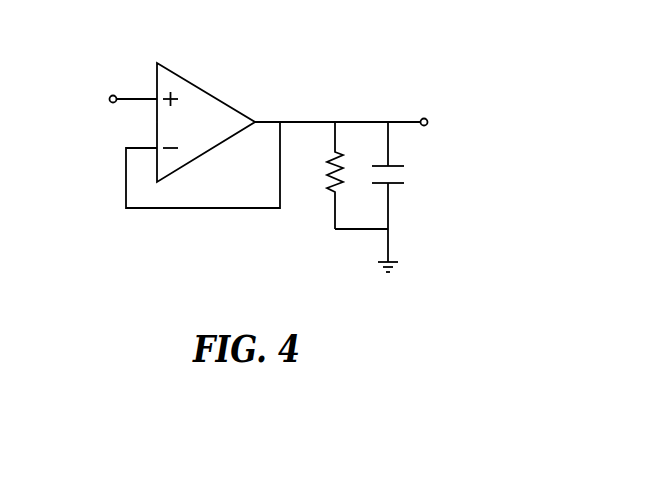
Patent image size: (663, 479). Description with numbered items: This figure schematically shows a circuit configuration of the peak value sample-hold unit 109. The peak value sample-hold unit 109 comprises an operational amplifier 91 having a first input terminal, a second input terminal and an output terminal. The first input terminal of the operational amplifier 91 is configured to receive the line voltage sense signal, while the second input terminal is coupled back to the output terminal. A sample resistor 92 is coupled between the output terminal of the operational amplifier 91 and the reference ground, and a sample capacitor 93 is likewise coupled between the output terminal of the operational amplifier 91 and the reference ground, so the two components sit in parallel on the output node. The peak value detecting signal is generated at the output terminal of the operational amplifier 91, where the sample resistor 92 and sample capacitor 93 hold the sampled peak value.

The peak value sample-hold unit 109 is at (386, 63).
The operational amplifier 91 is at (209, 136).
The sample resistor 92 is at (320, 175).
The sample capacitor 93 is at (403, 192).